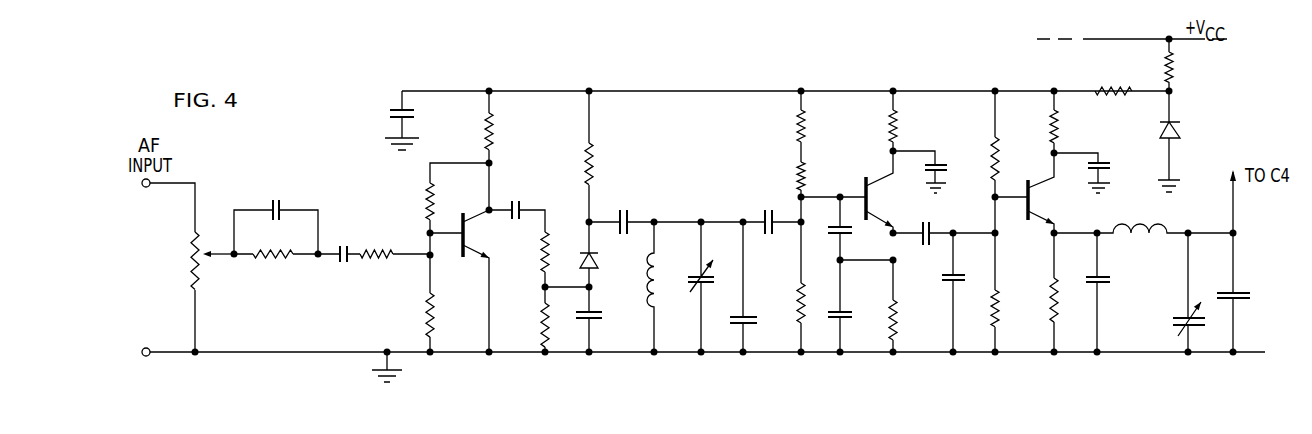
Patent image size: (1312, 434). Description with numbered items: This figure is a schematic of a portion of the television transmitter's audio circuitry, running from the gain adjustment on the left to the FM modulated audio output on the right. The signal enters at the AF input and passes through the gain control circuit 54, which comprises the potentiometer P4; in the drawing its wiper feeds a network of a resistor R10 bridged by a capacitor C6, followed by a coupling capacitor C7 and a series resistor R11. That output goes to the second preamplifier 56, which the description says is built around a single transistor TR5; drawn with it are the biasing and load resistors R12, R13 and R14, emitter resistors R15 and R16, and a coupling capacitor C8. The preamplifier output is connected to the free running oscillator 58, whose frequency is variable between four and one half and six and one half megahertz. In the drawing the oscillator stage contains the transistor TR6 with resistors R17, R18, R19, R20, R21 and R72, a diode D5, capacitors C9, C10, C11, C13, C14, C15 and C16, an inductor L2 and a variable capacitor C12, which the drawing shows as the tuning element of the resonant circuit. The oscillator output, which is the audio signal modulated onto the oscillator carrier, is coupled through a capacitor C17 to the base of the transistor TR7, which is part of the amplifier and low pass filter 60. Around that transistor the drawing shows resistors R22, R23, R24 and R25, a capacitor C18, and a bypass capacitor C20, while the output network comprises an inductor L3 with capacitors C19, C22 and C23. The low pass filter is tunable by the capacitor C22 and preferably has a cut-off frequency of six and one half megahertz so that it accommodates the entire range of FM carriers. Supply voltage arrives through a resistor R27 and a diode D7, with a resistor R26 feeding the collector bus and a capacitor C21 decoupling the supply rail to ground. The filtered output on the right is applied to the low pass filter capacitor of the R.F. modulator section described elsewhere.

The gain control circuit 54 is at (157, 268).
The second preamplifier 56 is at (547, 168).
The free running oscillator 58 is at (853, 168).
The amplifier and low pass filter 60 is at (1091, 221).
The potentiometer P4 is at (214, 261).
The resistor R10 is at (278, 269).
The resistor R11 is at (395, 242).
The resistor R12 is at (414, 294).
The resistor R13 is at (442, 200).
The resistor R14 is at (502, 131).
The resistor R15 is at (550, 267).
The resistor R16 is at (528, 329).
The resistor R17 is at (604, 157).
The resistor R18 is at (785, 289).
The resistor R19 is at (783, 192).
The resistor R20 is at (818, 136).
The resistor R21 is at (879, 308).
The resistor R22 is at (979, 294).
The resistor R23 is at (1009, 161).
The resistor R24 is at (1036, 294).
The resistor R25 is at (1070, 133).
The resistor R26 is at (1134, 79).
The resistor R27 is at (1186, 65).
The resistor R72 is at (910, 121).
The capacitor C6 is at (276, 217).
The capacitor C7 is at (339, 270).
The capacitor C8 is at (517, 206).
The capacitor C9 is at (600, 321).
The capacitor C10 is at (623, 210).
The capacitor C11 is at (738, 287).
The variable capacitor C12 is at (715, 287).
The capacitor C13 is at (772, 210).
The capacitor C14 is at (848, 308).
The capacitor C15 is at (862, 230).
The capacitor C16 is at (927, 167).
The capacitor C17 is at (946, 227).
The capacitor C18 is at (940, 294).
The capacitor C19 is at (1115, 294).
The capacitor C20 is at (1092, 165).
The capacitor C21 is at (394, 115).
The capacitor C22 is at (1177, 294).
The capacitor C23 is at (1242, 294).
The inductor L2 is at (663, 289).
The inductor L3 is at (1143, 220).
The diode D5 is at (601, 256).
The diode D7 is at (1182, 141).
The transistor TR5 is at (465, 283).
The transistor TR6 is at (853, 194).
The transistor TR7 is at (1030, 195).